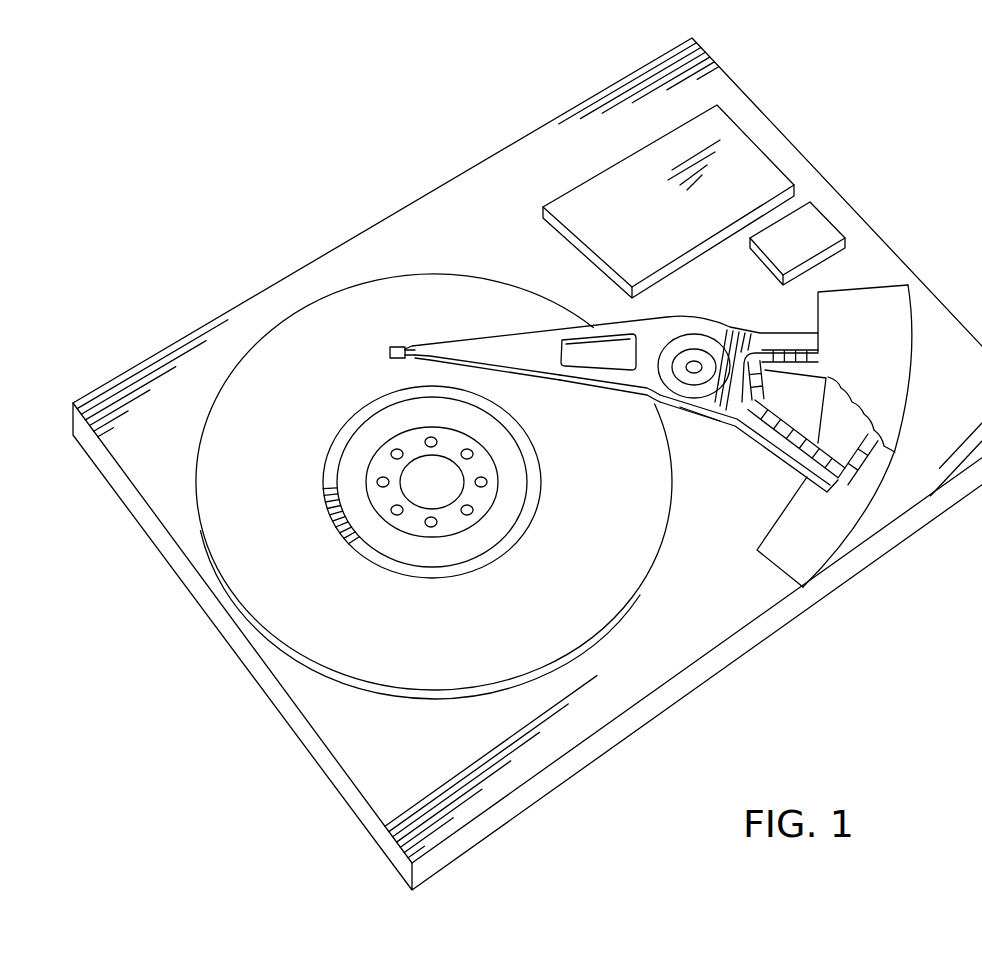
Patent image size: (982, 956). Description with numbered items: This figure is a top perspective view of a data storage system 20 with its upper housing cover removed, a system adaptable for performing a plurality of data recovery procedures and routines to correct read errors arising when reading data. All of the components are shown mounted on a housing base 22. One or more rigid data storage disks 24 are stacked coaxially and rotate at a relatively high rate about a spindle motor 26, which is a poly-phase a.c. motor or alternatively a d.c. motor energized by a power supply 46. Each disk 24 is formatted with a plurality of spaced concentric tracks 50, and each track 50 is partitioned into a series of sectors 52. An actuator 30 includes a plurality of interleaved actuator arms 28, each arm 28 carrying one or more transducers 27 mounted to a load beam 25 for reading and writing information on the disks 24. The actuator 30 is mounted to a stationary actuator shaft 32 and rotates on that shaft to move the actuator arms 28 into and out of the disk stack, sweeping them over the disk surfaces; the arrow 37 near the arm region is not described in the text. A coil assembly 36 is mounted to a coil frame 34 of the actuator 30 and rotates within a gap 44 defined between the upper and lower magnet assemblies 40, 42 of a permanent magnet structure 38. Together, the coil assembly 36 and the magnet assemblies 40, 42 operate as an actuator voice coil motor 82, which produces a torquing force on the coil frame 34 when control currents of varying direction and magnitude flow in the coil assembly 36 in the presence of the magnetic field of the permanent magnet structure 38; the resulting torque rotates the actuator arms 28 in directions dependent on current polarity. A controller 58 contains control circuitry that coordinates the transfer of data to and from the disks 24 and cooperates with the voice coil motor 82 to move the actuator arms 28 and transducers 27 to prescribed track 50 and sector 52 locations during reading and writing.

The data storage system 20 is at (866, 160).
The housing base 22 is at (720, 665).
The data storage disk 24 is at (254, 466).
The load beam 25 is at (409, 359).
The spindle motor 26 is at (450, 505).
The transducer 27 is at (392, 346).
The actuator arm 28 is at (533, 357).
The actuator 30 is at (710, 408).
The actuator shaft 32 is at (692, 361).
The coil frame 34 is at (752, 337).
The coil assembly 36 is at (766, 375).
The rotation direction 37 is at (698, 424).
The permanent magnet structure 38 is at (912, 315).
The upper magnet assembly 40 is at (898, 364).
The lower magnet assembly 42 is at (777, 556).
The gap 44 is at (882, 452).
The power supply 46 is at (640, 232).
The track 50 is at (340, 436).
The sector 52 is at (324, 513).
The controller 58 is at (810, 247).
The actuator voice coil motor 82 is at (802, 482).